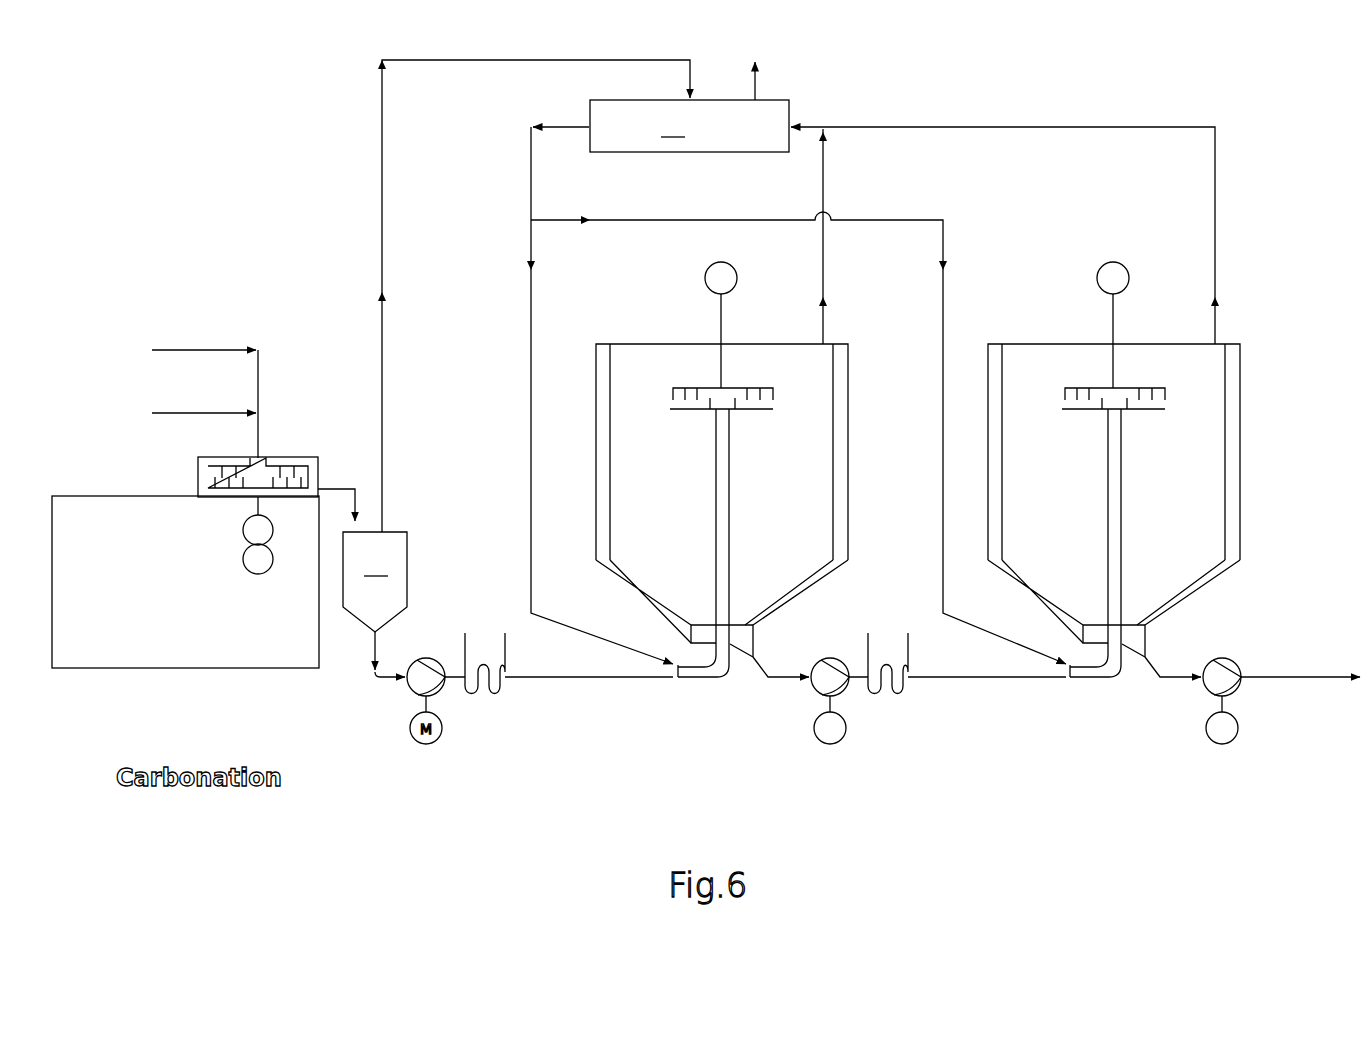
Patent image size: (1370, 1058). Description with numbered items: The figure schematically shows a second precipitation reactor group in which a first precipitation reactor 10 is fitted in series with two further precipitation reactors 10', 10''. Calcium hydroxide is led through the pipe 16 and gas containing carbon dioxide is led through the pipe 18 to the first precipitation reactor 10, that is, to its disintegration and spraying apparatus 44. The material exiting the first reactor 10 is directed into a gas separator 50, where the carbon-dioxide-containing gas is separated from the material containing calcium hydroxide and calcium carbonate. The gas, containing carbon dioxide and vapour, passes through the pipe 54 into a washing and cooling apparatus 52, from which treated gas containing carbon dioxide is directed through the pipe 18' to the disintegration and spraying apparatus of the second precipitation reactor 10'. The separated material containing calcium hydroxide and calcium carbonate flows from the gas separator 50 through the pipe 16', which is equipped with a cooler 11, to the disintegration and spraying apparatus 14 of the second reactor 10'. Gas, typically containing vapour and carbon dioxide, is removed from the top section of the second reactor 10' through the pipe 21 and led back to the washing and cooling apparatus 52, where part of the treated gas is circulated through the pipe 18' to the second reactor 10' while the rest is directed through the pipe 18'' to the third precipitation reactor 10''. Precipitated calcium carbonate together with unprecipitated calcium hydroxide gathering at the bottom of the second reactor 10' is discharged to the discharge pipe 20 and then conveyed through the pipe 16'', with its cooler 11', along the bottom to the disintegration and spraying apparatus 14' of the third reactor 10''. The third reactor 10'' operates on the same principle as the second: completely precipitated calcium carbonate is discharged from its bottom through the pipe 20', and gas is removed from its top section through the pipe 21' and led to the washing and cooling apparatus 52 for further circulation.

The first precipitation reactor 10 is at (200, 471).
The second precipitation reactor 10' is at (698, 527).
The third precipitation reactor 10'' is at (1125, 527).
The cooler 11 is at (559, 659).
The cooler 11' is at (957, 659).
The disintegration and spraying apparatus 14 is at (743, 469).
The disintegration and spraying apparatus 14' is at (1137, 469).
The pipe 16 is at (165, 404).
The pipe 16' is at (591, 673).
The pipe 16'' is at (983, 673).
The pipe 18 is at (180, 386).
The pipe 18' is at (584, 395).
The pipe 18'' is at (798, 438).
The discharge pipe 20 is at (801, 685).
The pipe 20' is at (1252, 685).
The pipe 21 is at (840, 236).
The pipe 21' is at (1024, 235).
The disintegration and spraying apparatus 44 is at (280, 446).
The gas separator 50 is at (362, 583).
The washing and cooling apparatus 52 is at (698, 104).
The pipe 54 is at (384, 222).